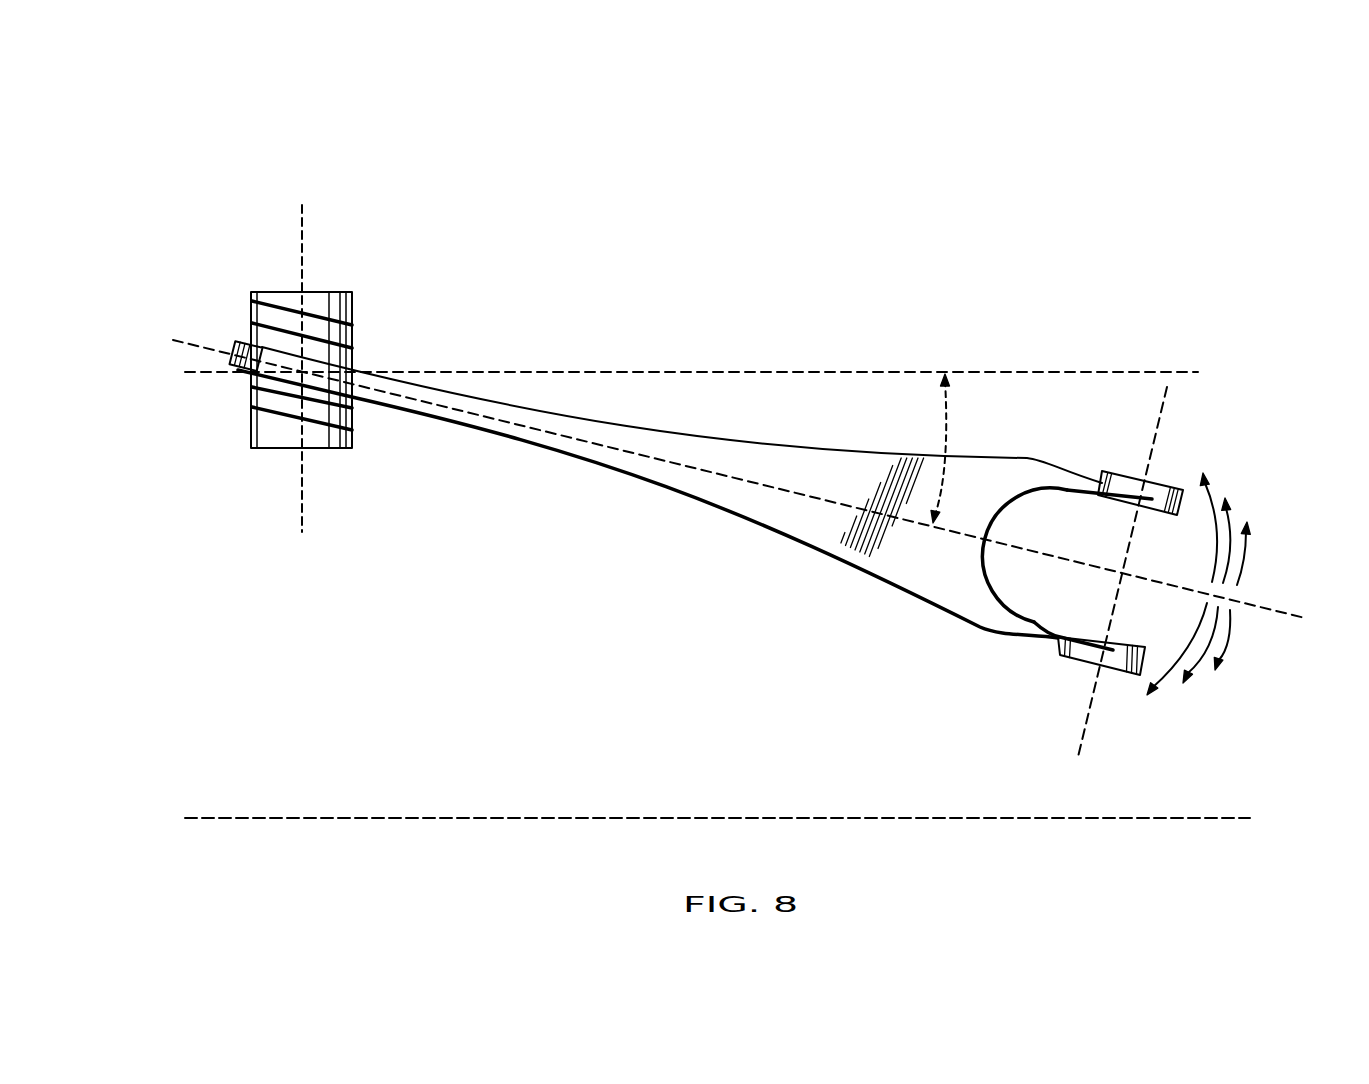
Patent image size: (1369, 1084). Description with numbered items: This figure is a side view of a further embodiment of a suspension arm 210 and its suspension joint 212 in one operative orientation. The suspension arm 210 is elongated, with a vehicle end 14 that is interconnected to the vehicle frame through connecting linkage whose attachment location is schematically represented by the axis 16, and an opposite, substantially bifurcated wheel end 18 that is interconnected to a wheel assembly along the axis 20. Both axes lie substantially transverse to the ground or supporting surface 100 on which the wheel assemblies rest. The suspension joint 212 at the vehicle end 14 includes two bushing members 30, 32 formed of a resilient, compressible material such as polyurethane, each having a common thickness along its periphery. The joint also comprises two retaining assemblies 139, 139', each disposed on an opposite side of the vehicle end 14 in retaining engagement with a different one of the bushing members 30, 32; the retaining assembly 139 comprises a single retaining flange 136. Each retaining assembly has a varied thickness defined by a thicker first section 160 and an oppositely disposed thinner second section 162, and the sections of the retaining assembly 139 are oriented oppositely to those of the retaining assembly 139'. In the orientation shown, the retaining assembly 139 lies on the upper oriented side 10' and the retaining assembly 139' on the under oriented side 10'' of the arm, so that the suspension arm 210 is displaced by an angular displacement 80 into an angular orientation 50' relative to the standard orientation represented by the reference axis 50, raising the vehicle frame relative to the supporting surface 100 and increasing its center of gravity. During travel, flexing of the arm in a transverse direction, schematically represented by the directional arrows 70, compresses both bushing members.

The upper oriented side 10' is at (682, 400).
The under oriented side 10'' is at (648, 508).
The vehicle end 14 is at (237, 361).
The axis 16 is at (300, 235).
The wheel end 18 is at (1051, 438).
The axis 20 is at (1161, 415).
The bushing member 30 is at (343, 333).
The bushing member 32 is at (347, 415).
The reference axis 50 is at (691, 320).
The angular orientation 50' is at (763, 479).
The directional arrows 70 is at (1197, 437).
The angular displacement 80 is at (943, 420).
The supporting surface 100 is at (567, 818).
The retaining flange 136 is at (333, 292).
The retaining assembly 139 is at (190, 231).
The retaining assembly 139' is at (221, 513).
The first section 160 is at (345, 308).
The second section 162 is at (250, 298).
The suspension arm 210 is at (822, 622).
The suspension joint 212 is at (368, 287).